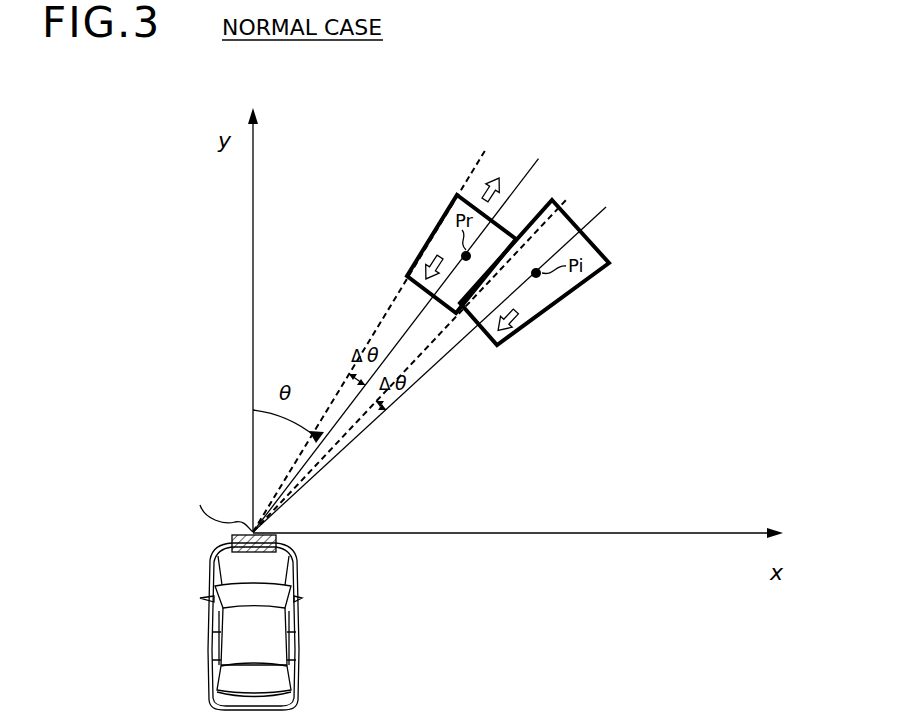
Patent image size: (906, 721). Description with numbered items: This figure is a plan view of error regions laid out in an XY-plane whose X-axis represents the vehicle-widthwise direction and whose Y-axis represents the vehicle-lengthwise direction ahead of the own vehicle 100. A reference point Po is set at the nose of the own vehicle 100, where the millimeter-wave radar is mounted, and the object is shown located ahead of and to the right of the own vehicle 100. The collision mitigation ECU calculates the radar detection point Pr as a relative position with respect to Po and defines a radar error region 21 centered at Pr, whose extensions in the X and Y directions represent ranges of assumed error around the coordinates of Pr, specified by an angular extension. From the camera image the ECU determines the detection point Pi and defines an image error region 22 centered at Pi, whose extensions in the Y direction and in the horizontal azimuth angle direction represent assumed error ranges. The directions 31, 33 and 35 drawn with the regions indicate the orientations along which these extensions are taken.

The radar error region 21 is at (440, 243).
The image error region 22 is at (540, 303).
The width direction of radar search region 31 is at (422, 268).
The width direction of image search region 33 is at (502, 342).
The radial direction of radar detection 35 is at (492, 176).
The own vehicle 100 is at (298, 575).